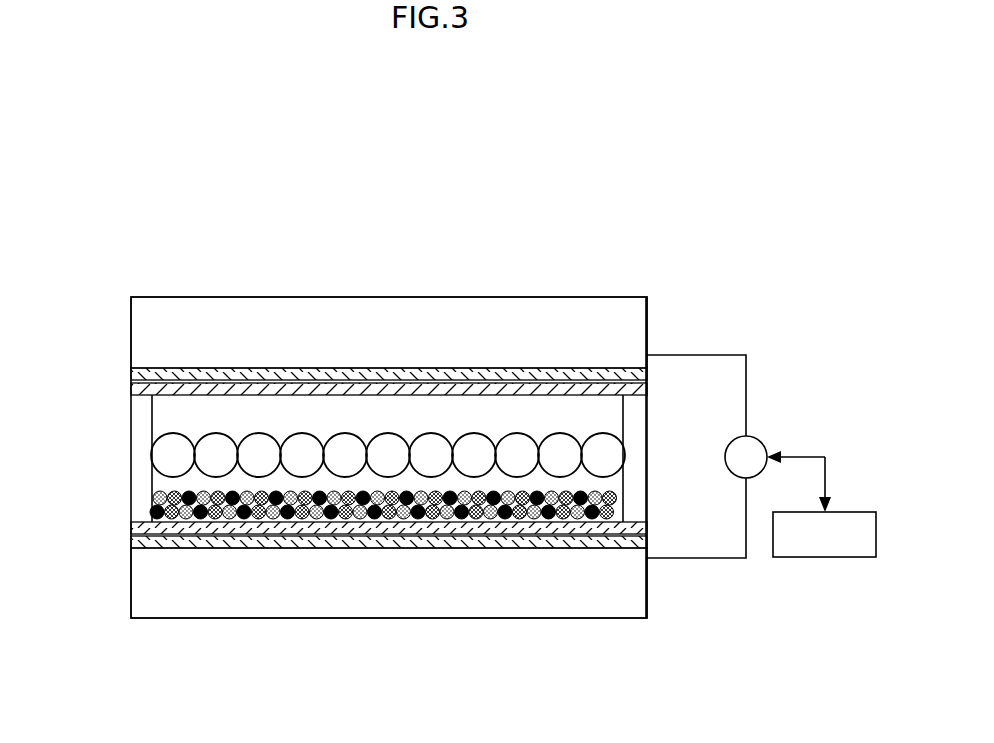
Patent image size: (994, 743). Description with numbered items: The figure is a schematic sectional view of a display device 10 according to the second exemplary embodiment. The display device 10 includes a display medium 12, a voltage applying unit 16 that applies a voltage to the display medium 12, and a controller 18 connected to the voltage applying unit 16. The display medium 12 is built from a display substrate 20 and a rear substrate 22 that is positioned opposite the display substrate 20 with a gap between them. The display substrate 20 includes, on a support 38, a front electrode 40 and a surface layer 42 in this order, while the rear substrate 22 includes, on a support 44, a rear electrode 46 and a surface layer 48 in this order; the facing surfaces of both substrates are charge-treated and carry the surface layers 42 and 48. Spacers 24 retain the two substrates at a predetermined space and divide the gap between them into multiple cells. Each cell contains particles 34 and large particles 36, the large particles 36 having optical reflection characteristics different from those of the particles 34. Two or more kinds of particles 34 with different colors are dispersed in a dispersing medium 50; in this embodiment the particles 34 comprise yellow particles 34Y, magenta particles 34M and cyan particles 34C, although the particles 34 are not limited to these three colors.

The display device 10 is at (489, 224).
The display medium 12 is at (595, 294).
The voltage applying unit 16 is at (760, 437).
The controller 18 is at (826, 560).
The display substrate 20 is at (62, 303).
The rear substrate 22 is at (62, 516).
The spacers 24 is at (143, 466).
The particles 34 is at (318, 673).
The magenta particles 34M is at (158, 524).
The cyan particles 34C is at (180, 524).
The yellow particles 34Y is at (202, 526).
The large particles 36 is at (559, 443).
The support 38 is at (143, 322).
The front electrode 40 is at (133, 372).
The surface layer 42 is at (133, 391).
The support 44 is at (143, 598).
The rear electrode 46 is at (131, 543).
The surface layer 48 is at (133, 524).
The dispersing medium 50 is at (309, 412).